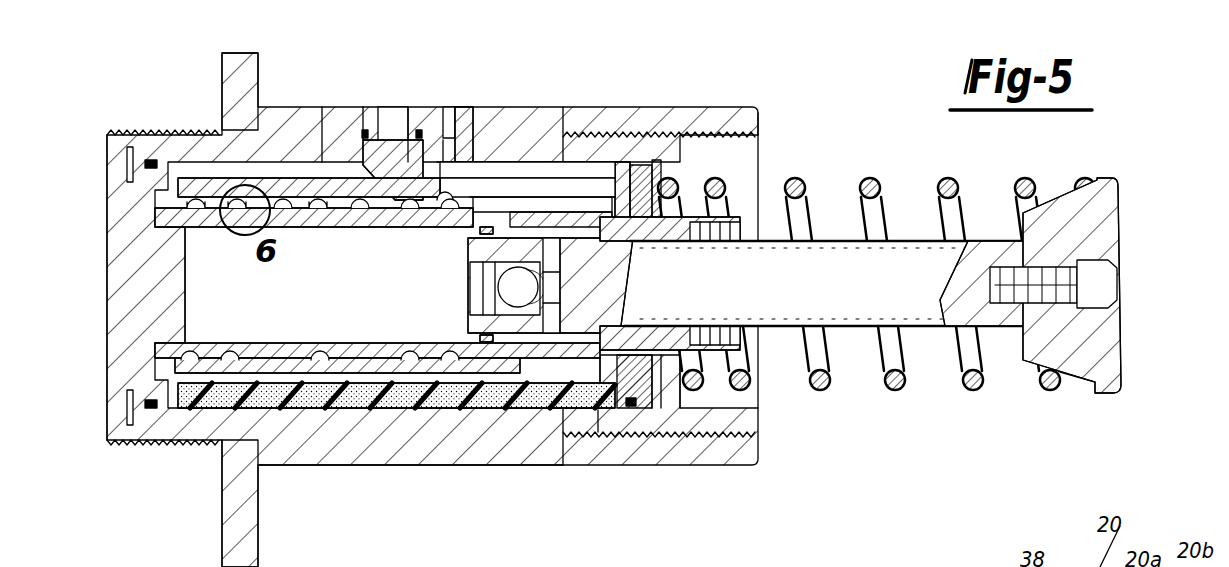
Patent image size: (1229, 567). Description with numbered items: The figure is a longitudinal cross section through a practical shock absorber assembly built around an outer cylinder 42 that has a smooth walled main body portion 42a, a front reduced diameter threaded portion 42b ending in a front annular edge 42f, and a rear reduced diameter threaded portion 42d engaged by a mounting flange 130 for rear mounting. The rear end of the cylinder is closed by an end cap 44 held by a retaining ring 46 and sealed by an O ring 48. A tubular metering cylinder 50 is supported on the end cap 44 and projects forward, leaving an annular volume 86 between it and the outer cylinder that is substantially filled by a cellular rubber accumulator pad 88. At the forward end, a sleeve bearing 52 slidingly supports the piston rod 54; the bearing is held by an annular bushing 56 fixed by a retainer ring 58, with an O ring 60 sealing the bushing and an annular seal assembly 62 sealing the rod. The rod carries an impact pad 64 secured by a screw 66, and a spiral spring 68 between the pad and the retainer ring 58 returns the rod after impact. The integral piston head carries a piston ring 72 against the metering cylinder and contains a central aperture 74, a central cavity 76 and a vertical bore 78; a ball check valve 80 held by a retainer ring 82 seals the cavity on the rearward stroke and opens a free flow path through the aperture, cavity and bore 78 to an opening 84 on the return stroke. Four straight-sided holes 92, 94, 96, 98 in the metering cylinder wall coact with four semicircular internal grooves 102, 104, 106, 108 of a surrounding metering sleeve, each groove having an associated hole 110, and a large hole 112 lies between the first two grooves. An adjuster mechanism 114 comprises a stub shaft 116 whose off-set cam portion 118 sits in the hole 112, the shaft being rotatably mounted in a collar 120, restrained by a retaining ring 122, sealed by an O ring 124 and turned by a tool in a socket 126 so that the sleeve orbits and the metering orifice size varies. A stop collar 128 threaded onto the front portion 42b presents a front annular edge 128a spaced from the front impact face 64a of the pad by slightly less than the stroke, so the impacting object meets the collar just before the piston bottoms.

The outer cylinder 42 is at (530, 84).
The main body smooth walled cylindrical portion 42a is at (320, 467).
The front reduced diameter threaded portion 42b is at (648, 402).
The rear reduced diameter threaded portion 42d is at (187, 443).
The front annular edge 42f is at (683, 413).
The end cap 44 is at (107, 300).
The retaining ring 46 is at (127, 172).
The O ring 48 is at (150, 407).
The metering cylinder 50 is at (355, 322).
The sleeve bearing 52 is at (490, 357).
The piston rod 54 is at (812, 260).
The annular bushing 56 is at (630, 405).
The retainer ring 58 is at (655, 162).
The O ring 60 is at (598, 432).
The annular seal assembly 62 is at (738, 215).
The impact pad 64 is at (1110, 224).
The front impact face 64a is at (1121, 352).
The screw 66 is at (1103, 284).
The spiral spring 68 is at (880, 185).
The piston ring 72 is at (480, 347).
The central aperture 74 is at (513, 303).
The central cavity 76 is at (570, 286).
The bore 78 is at (560, 253).
The ball check valve 80 is at (490, 315).
The retainer ring 82 is at (478, 282).
The opening 84 is at (535, 167).
The annular volume 86 is at (515, 212).
The accumulator pad 88 is at (405, 403).
The circular hole 92 is at (448, 227).
The circular hole 94 is at (340, 220).
The circular hole 96 is at (222, 262).
The circular hole 98 is at (205, 228).
The internal groove 102 is at (473, 225).
The internal groove 104 is at (375, 190).
The internal groove 106 is at (262, 190).
The internal groove 108 is at (208, 180).
The straight-sided hole 110 is at (290, 225).
The circular hole 112 is at (397, 232).
The adjuster mechanism 114 is at (392, 100).
The stub shaft 116 is at (428, 140).
The off-set cam portion 118 is at (370, 232).
The collar 120 is at (440, 178).
The retaining ring 122 is at (468, 172).
The O ring 124 is at (365, 152).
The socket 126 is at (400, 130).
The stop collar 128 is at (655, 98).
The front annular edge 128a is at (760, 120).
The mounting flange 130 is at (262, 62).